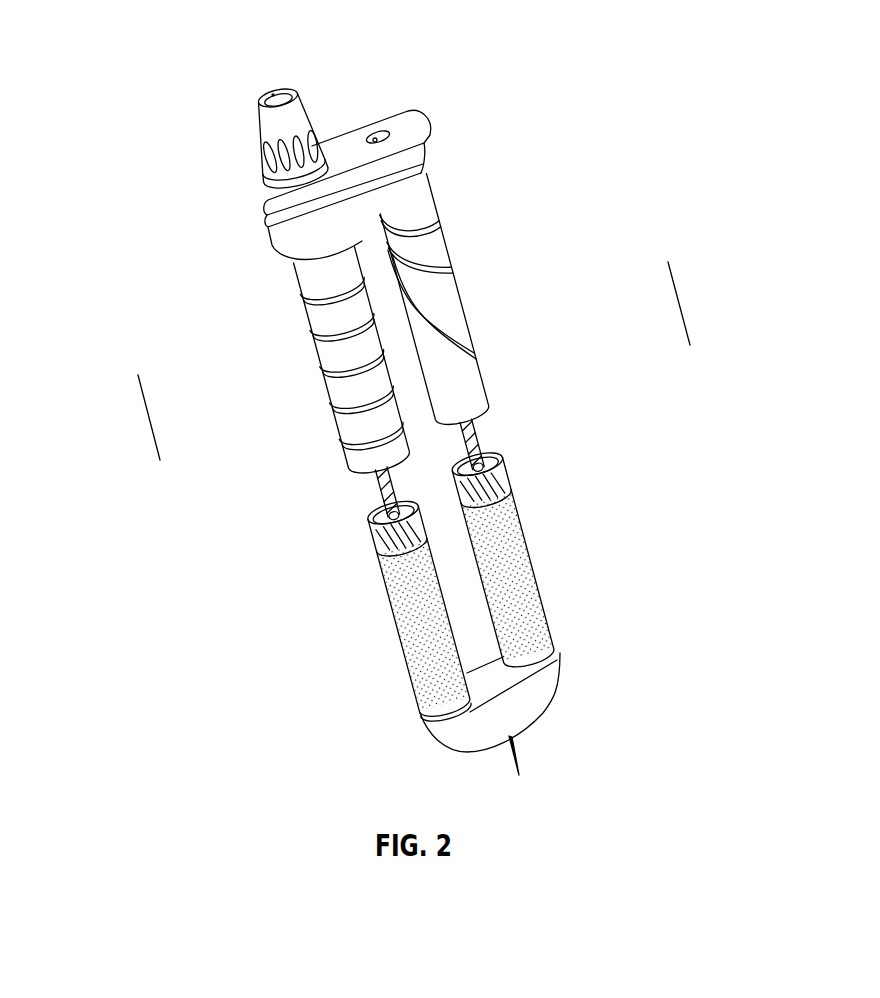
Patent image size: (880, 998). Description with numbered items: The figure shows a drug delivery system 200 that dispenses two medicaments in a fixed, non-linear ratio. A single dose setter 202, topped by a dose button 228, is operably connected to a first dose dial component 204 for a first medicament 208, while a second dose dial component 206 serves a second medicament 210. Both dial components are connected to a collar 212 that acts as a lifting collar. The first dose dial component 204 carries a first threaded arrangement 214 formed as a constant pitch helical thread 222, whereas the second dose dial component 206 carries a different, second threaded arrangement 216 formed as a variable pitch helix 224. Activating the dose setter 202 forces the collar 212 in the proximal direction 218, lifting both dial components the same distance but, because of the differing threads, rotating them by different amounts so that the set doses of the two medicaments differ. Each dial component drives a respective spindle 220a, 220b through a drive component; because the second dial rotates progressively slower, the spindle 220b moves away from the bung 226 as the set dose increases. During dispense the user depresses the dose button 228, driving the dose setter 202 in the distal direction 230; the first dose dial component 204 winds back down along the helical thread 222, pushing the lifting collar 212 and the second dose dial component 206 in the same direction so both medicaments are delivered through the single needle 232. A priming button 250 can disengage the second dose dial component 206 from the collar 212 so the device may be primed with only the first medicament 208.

The drug delivery system 200 is at (137, 157).
The single dose setter 202 is at (310, 124).
The first dose dial component 204 is at (266, 303).
The second dose dial component 206 is at (482, 223).
The first medicament 208 is at (415, 615).
The second medicament 210 is at (520, 577).
The collar 212 is at (246, 214).
The first threaded arrangement 214 is at (294, 366).
The second threaded arrangement 216 is at (525, 287).
The proximal direction 218 is at (681, 307).
The spindle 220a is at (375, 497).
The spindle 220b is at (483, 442).
The helical thread 222 is at (306, 408).
The variable pitch helix 224 is at (488, 329).
The bung 226 is at (505, 482).
The dose button 228 is at (273, 94).
The distal direction 230 is at (148, 420).
The needle 232 is at (521, 749).
The priming button 250 is at (417, 122).